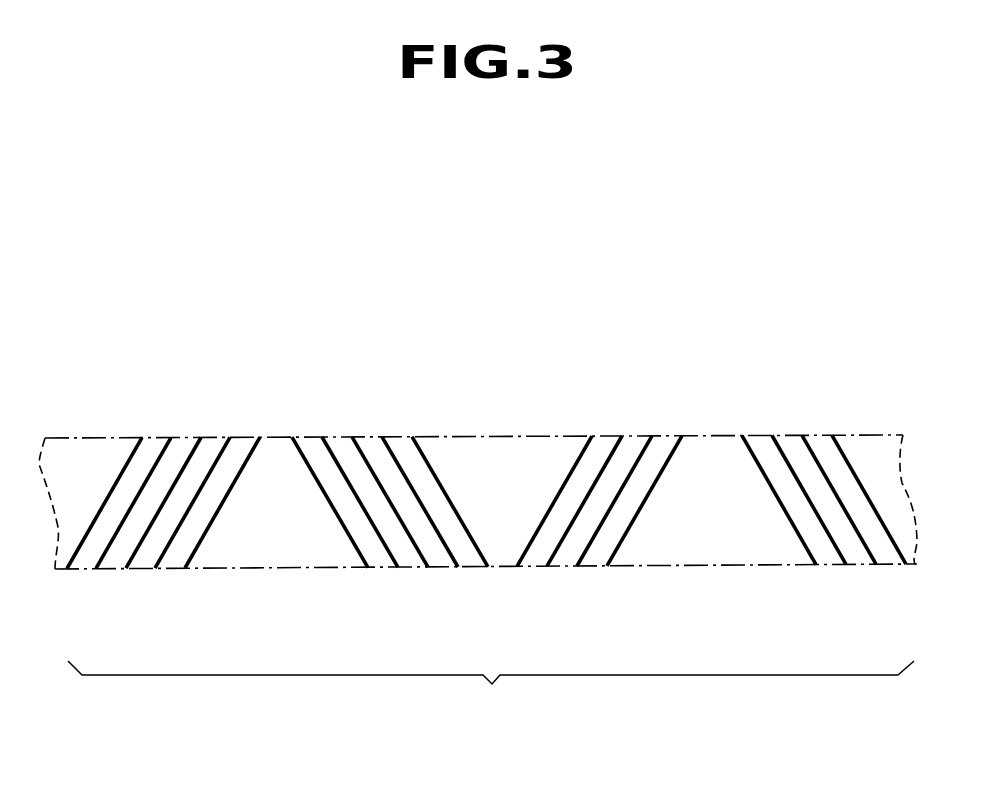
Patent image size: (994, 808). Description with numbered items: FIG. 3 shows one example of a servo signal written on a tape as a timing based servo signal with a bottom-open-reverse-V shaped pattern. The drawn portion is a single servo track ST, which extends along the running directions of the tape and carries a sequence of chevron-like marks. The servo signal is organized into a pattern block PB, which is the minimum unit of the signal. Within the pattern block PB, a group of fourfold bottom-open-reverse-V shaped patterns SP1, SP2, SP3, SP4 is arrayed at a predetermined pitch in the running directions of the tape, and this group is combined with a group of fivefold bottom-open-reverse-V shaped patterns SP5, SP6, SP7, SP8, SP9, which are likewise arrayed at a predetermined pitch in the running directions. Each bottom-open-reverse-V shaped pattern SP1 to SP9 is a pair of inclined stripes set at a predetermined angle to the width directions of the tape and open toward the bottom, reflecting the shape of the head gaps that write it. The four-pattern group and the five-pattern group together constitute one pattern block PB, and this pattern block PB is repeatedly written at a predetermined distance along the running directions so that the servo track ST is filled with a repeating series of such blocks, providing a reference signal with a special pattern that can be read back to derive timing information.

The servo track ST is at (121, 418).
The pattern block PB is at (491, 690).
The bottom-open-reverse-V shaped pattern SP1 is at (672, 455).
The bottom-open-reverse-V shaped pattern SP2 is at (642, 457).
The bottom-open-reverse-V shaped pattern SP3 is at (566, 538).
The bottom-open-reverse-V shaped pattern SP4 is at (528, 548).
The bottom-open-reverse-V shaped pattern SP5 is at (250, 458).
The bottom-open-reverse-V shaped pattern SP6 is at (220, 460).
The bottom-open-reverse-V shaped pattern SP7 is at (145, 538).
The bottom-open-reverse-V shaped pattern SP8 is at (107, 550).
The bottom-open-reverse-V shaped pattern SP9 is at (350, 540).